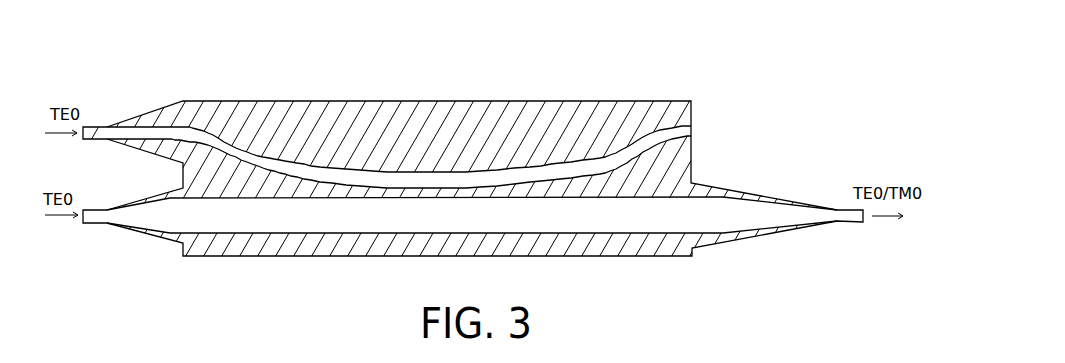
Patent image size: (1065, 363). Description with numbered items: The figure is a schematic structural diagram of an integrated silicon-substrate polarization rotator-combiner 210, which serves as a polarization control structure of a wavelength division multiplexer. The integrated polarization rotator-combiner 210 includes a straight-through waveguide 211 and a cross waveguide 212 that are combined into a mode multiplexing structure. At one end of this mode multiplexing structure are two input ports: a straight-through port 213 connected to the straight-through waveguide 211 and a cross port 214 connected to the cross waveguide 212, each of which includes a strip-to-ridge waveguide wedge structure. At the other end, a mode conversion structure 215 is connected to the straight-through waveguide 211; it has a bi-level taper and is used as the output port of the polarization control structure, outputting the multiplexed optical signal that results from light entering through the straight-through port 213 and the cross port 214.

The integrated polarization rotator-combiner 210 is at (442, 88).
The straight-through waveguide 211 is at (362, 222).
The cross waveguide 212 is at (465, 177).
The straight-through port 213 is at (133, 218).
The cross port 214 is at (133, 129).
The mode conversion structure 215 is at (750, 217).